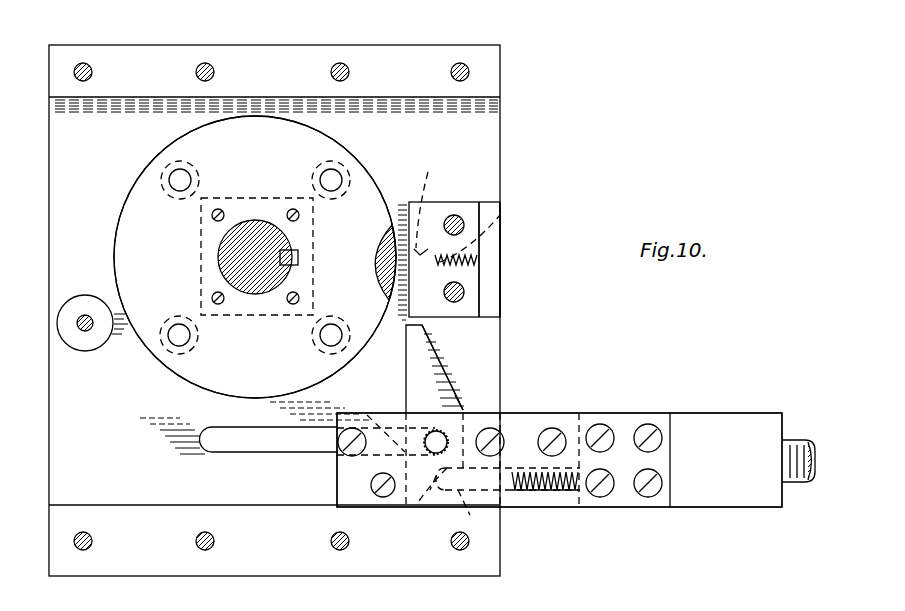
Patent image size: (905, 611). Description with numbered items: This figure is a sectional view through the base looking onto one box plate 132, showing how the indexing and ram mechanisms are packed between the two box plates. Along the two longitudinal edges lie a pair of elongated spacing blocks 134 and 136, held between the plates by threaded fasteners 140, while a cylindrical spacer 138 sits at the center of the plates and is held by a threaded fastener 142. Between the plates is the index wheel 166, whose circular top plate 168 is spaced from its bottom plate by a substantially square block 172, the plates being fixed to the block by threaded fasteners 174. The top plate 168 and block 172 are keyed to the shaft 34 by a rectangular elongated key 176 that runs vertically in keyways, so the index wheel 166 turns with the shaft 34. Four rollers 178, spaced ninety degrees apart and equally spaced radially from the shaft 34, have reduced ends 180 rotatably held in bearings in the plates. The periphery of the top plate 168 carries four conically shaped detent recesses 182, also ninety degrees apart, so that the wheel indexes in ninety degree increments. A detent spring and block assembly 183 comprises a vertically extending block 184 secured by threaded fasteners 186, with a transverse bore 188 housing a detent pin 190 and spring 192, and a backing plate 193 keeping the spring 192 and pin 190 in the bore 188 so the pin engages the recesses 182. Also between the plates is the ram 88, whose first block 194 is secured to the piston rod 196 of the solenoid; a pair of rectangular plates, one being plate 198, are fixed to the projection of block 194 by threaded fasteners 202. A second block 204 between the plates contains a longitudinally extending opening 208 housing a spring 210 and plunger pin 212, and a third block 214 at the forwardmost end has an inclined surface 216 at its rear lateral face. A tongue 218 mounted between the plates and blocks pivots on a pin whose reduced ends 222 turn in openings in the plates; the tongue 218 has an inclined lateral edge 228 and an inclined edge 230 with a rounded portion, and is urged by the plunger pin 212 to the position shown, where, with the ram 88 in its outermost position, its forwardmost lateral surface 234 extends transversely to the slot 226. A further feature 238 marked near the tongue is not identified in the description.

The shaft 34 is at (252, 232).
The ram 88 is at (717, 414).
The box plate 132 is at (490, 132).
The spacing block 134 is at (488, 68).
The spacing block 136 is at (497, 562).
The cylindrical spacer 138 is at (87, 332).
The threaded fasteners 140 is at (90, 68).
The threaded fastener 142 is at (86, 314).
The index wheel 166 is at (134, 187).
The circular top plate 168 is at (332, 143).
The square block 172 is at (201, 238).
The threaded fasteners 174 is at (290, 305).
The key 176 is at (299, 257).
The rollers 178 is at (197, 168).
The reduced ends 180 is at (183, 178).
The detent recesses 182 is at (262, 116).
The detent spring and block assembly 183 is at (500, 280).
The block 184 is at (472, 278).
The threaded fasteners 186 is at (455, 214).
The bore 188 is at (427, 202).
The detent pin 190 is at (385, 243).
The spring 192 is at (502, 215).
The backing plate 193 is at (498, 239).
The first block 194 is at (765, 418).
The piston rod 196 is at (812, 471).
The rectangular plate 198 is at (630, 418).
The threaded fasteners 202 is at (605, 493).
The second block 204 is at (582, 412).
The opening 208 is at (498, 500).
The spring 210 is at (566, 506).
The plunger pin 212 is at (455, 497).
The third block 214 is at (336, 480).
The inclined surface 216 is at (422, 444).
The tongue 218 is at (455, 378).
The reduced ends 222 is at (437, 430).
The slot 226 is at (228, 447).
The inclined lateral edge 228 is at (447, 357).
The inclined edge 230 is at (430, 490).
The forwardmost lateral surface 234 is at (408, 394).
The cam tip 238 is at (466, 410).